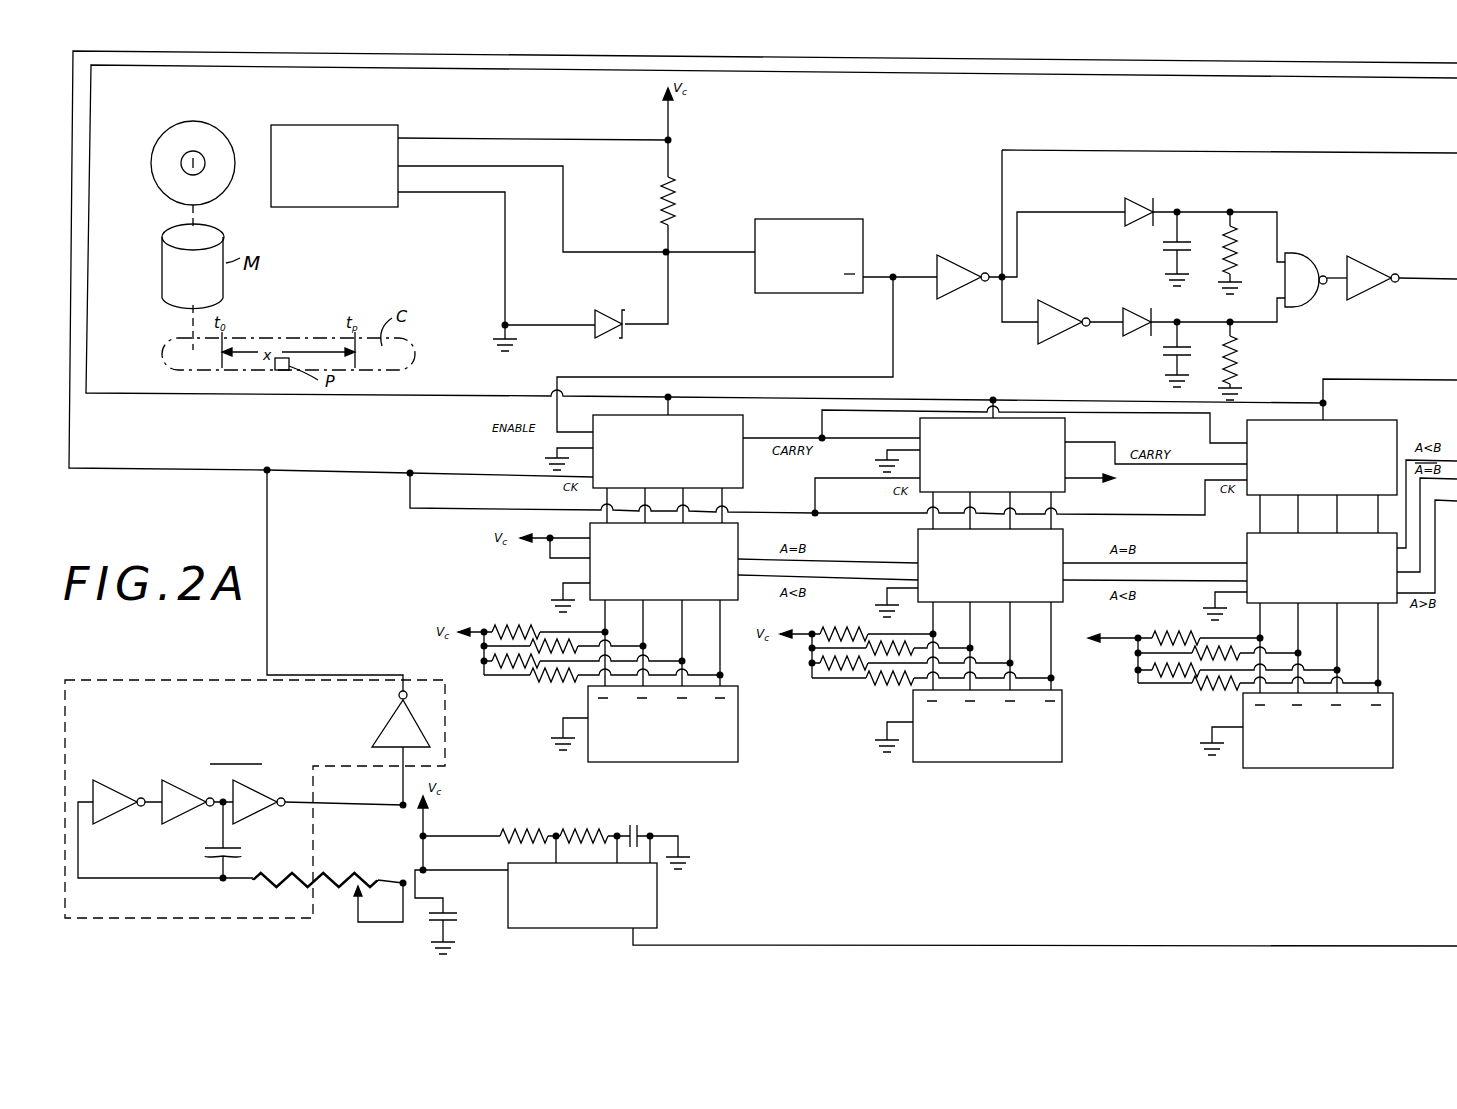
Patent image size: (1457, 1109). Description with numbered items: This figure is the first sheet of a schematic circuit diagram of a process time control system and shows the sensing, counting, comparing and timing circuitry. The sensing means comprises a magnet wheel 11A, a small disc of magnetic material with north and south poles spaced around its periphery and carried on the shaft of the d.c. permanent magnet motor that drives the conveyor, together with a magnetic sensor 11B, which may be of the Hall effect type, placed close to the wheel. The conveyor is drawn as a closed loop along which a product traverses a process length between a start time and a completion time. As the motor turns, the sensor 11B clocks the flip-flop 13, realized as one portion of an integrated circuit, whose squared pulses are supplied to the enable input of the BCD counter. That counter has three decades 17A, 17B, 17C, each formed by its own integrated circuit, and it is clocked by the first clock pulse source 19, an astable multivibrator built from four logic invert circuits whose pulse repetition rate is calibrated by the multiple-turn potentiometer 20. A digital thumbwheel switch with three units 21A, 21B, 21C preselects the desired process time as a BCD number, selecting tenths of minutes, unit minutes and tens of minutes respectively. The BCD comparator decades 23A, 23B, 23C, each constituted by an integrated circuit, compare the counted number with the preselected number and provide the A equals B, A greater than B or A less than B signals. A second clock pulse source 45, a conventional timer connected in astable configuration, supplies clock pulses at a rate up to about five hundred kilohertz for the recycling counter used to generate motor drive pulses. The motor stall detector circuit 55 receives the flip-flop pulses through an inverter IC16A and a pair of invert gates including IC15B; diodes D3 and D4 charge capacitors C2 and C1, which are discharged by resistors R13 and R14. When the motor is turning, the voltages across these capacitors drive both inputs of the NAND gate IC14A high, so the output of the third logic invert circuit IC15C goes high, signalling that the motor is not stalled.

The magnet wheel 11A is at (196, 122).
The magnetic sensor 11B is at (365, 125).
The flip-flop 13 is at (797, 219).
The first decade of BCD counter 17A is at (720, 415).
The second decade of BCD counter 17B is at (1068, 422).
The third decade of BCD counter 17C is at (1345, 420).
The first clock pulse source 19 is at (255, 802).
The potentiometer 20 is at (355, 898).
The thumbwheel switch unit for tenths of minutes 21A is at (738, 745).
The thumbwheel switch unit for unit minutes 21B is at (1062, 748).
The thumbwheel switch unit for tens of minutes 21C is at (1243, 762).
The first decade of BCD comparator 23A is at (735, 523).
The second decade of BCD comparator 23B is at (1065, 532).
The third decade of BCD comparator 23C is at (1247, 534).
The second clock pulse source 45 is at (657, 895).
The motor stall detector circuit 55 is at (1224, 283).
The diode D3 is at (1136, 204).
The diode D4 is at (1132, 337).
The capacitor C1 is at (1163, 352).
The capacitor C2 is at (1163, 246).
The resistor R13 is at (1240, 252).
The resistor R14 is at (1240, 360).
The inverter IC16A is at (990, 235).
The logic invert gate IC15B is at (1062, 345).
The third logic invert circuit IC15C is at (1380, 262).
The NAND gate IC14A is at (1300, 312).